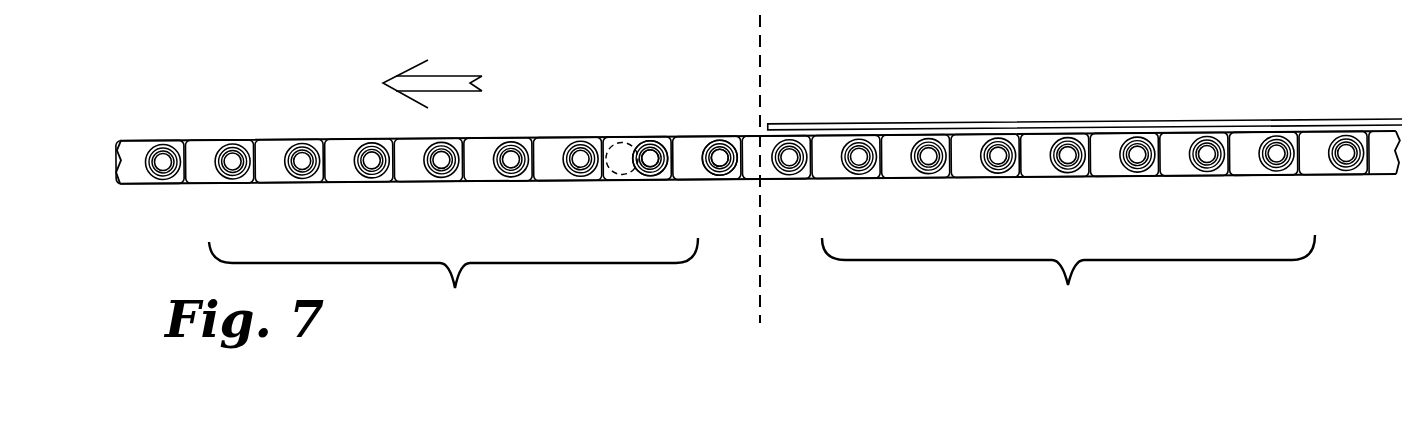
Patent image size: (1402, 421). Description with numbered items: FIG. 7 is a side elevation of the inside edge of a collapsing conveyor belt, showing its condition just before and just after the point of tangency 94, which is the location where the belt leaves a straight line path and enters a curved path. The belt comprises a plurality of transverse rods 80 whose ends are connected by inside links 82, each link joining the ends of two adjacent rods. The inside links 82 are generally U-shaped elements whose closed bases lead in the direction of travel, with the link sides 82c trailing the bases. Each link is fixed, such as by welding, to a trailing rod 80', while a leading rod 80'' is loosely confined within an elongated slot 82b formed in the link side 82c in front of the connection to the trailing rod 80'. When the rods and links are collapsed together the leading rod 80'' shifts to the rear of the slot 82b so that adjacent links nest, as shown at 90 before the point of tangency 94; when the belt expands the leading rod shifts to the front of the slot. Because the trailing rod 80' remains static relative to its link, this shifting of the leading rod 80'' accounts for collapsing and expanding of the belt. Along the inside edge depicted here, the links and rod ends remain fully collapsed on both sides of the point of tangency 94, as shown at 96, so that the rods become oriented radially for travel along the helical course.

The transverse rods 80 is at (1085, 89).
The trailing rod 80' is at (713, 118).
The leading rod 80'' is at (640, 123).
The inside links 82 is at (892, 183).
The elongated slot 82b is at (626, 166).
The link side 82c is at (733, 227).
The nested inside links 90 is at (1080, 227).
The point of tangency 94 is at (763, 230).
The collapsed inside links after tangency 96 is at (438, 230).